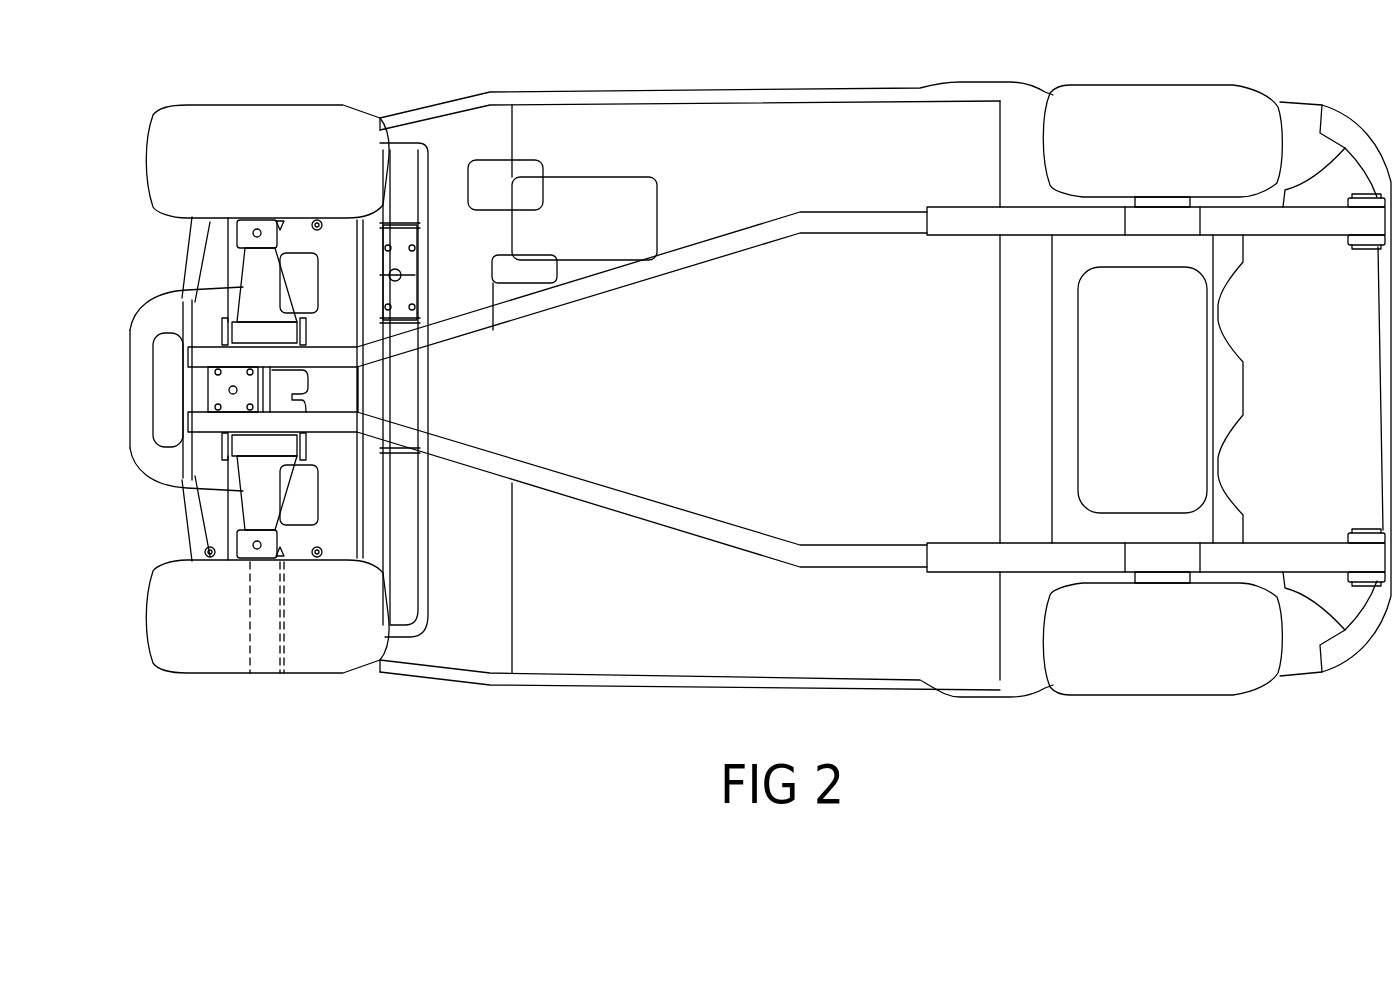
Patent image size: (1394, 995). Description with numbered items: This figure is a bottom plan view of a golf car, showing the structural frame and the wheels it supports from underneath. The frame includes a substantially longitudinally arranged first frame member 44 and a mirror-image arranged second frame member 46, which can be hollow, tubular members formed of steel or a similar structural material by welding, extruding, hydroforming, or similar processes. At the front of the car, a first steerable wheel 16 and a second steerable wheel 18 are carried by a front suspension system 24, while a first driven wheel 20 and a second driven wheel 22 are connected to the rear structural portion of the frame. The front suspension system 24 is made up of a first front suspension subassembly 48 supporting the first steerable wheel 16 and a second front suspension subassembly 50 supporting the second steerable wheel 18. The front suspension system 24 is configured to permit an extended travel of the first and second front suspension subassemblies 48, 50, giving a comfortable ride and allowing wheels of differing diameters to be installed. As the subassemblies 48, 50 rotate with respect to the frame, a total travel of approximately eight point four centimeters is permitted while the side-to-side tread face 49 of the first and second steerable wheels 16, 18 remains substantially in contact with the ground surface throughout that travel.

The first steerable wheel 16 is at (297, 657).
The second steerable wheel 18 is at (280, 125).
The first driven wheel 20 is at (1188, 675).
The second driven wheel 22 is at (1198, 105).
The front suspension system 24 is at (145, 487).
The first frame member 44 is at (849, 565).
The second frame member 46 is at (753, 240).
The first front suspension subassembly 48 is at (278, 514).
The tread face 49 is at (268, 652).
The second front suspension subassembly 50 is at (277, 250).